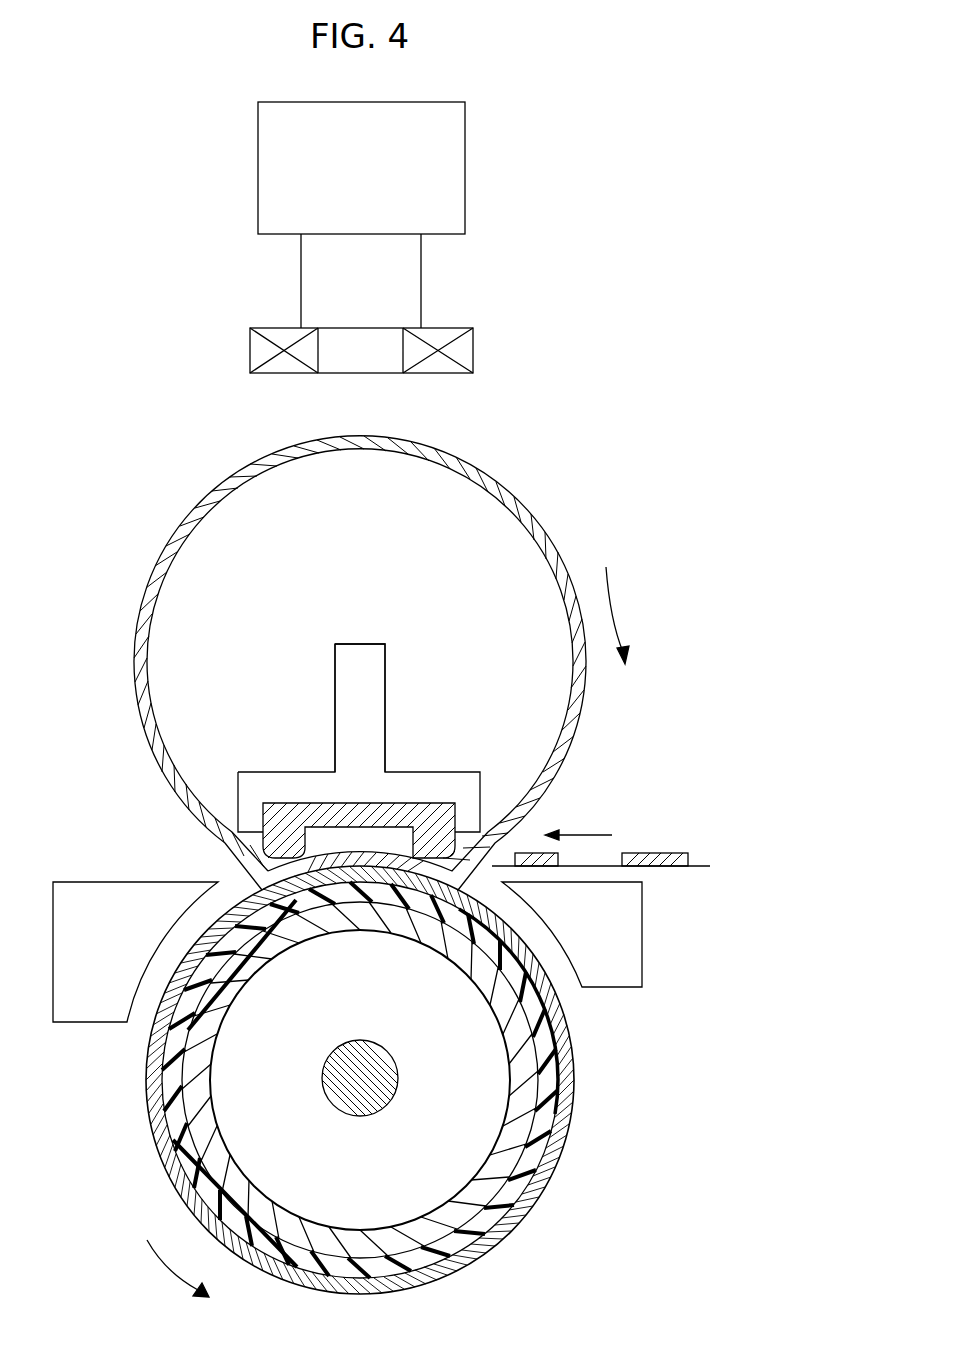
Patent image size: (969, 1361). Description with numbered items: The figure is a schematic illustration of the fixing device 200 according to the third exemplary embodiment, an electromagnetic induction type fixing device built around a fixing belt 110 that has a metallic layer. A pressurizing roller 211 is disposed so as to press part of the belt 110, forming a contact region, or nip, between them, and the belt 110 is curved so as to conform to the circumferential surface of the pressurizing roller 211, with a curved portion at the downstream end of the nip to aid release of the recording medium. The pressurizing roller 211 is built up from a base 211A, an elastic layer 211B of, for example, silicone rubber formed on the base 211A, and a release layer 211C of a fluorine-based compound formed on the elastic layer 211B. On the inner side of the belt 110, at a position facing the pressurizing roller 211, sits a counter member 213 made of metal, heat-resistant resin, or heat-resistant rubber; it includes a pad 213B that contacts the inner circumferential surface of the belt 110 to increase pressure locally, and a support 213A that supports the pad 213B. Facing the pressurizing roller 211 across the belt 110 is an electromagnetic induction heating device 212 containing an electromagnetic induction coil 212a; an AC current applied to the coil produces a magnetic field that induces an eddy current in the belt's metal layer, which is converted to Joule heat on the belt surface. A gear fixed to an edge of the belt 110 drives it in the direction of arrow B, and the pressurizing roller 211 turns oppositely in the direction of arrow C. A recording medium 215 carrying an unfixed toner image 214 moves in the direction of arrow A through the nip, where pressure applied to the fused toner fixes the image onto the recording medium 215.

The fixing device 200 is at (734, 208).
The electromagnetic induction heating device 212 is at (482, 164).
The electromagnetic induction coil 212a is at (474, 352).
The fixing belt 110 is at (512, 495).
The counter member 213 is at (360, 643).
The support 213A is at (335, 688).
The pad 213B is at (424, 802).
The unfixed toner image 214 is at (654, 853).
The recording medium 215 is at (668, 868).
The pressurizing roller 211 is at (409, 1080).
The base 211A is at (537, 1197).
The elastic layer 211B is at (570, 1072).
The release layer 211C is at (567, 1140).